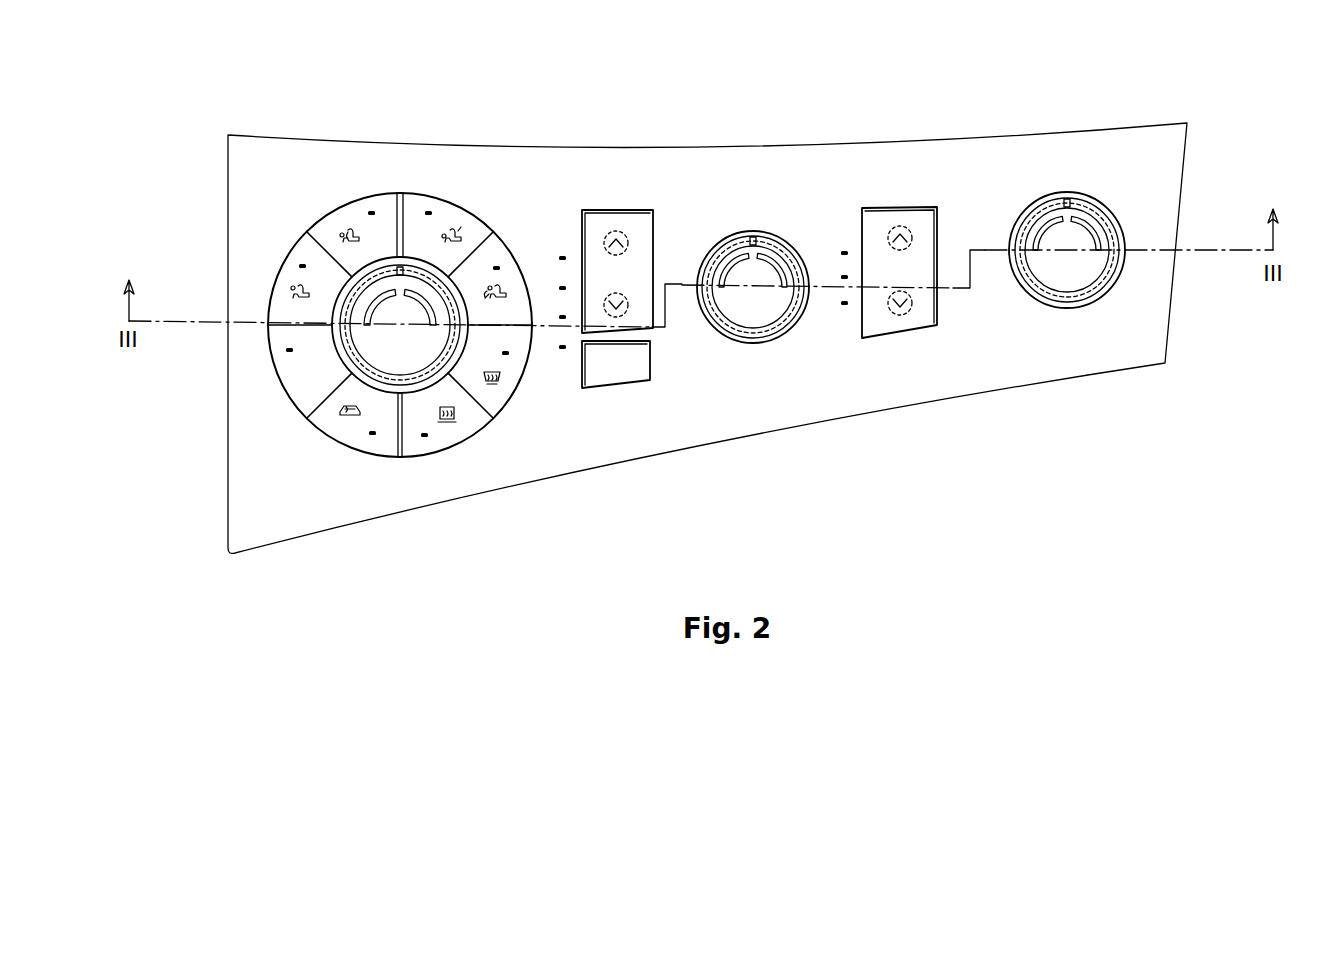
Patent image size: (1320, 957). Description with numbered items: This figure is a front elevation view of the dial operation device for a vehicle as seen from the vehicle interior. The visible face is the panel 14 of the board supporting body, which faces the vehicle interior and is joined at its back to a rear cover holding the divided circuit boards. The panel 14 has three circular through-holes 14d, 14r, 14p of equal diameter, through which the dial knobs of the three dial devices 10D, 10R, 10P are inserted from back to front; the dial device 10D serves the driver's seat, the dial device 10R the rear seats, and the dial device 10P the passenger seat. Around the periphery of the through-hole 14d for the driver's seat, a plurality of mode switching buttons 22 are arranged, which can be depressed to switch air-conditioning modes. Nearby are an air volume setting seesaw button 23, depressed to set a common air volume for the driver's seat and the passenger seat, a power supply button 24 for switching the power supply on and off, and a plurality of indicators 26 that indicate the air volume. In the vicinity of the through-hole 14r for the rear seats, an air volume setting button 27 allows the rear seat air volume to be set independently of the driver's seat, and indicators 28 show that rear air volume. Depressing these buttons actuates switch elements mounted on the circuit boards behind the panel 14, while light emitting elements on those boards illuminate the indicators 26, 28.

The panel 14 is at (1167, 390).
The through-hole 14d is at (376, 277).
The through-hole 14r is at (723, 238).
The through-hole 14p is at (1108, 210).
The dial device 10D is at (410, 292).
The dial device 10R is at (775, 246).
The dial device 10P is at (1055, 205).
The mode switching buttons 22 is at (300, 263).
The air volume setting seesaw button 23 is at (637, 222).
The power supply button 24 is at (633, 370).
The indicators 26 is at (563, 288).
The air volume setting button 27 is at (920, 222).
The indicators 28 is at (845, 303).